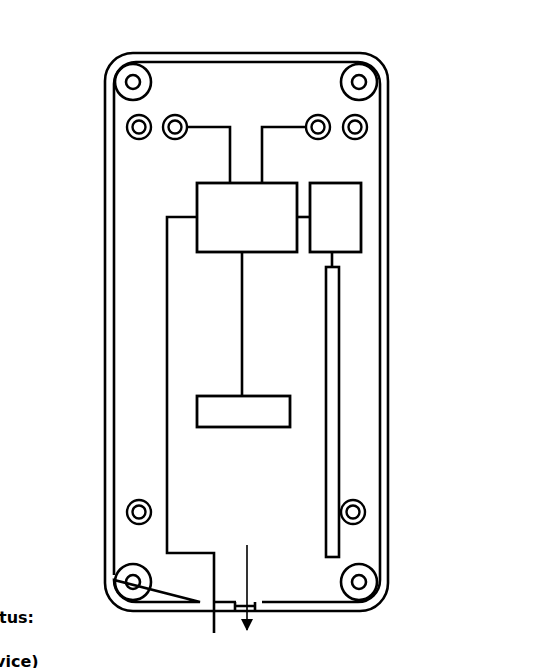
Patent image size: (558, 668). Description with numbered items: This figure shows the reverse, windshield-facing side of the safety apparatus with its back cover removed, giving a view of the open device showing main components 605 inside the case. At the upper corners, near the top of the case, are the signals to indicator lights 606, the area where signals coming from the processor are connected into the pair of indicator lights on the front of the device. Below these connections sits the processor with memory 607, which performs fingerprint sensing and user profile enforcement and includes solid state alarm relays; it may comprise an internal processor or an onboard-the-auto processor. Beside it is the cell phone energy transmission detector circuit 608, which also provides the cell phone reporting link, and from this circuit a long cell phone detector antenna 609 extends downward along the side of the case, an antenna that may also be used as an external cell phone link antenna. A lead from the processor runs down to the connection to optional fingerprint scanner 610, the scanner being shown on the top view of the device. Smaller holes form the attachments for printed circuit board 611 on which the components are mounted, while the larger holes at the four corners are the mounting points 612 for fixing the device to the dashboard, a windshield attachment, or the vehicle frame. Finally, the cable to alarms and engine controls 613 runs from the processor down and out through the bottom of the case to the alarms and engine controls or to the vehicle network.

The view of open device showing main components 605 is at (124, 74).
The signals to indicator lights 606 is at (330, 116).
The processor with memory 607 is at (282, 180).
The cell phone energy transmission detector circuit 608 is at (367, 209).
The cell phone detector antenna 609 is at (344, 305).
The connection to optional fingerprint scanner 610 is at (294, 399).
The attachments for printed circuit board 611 is at (364, 501).
The mounting points 612 is at (369, 575).
The cable to alarms and engine controls 613 is at (164, 479).